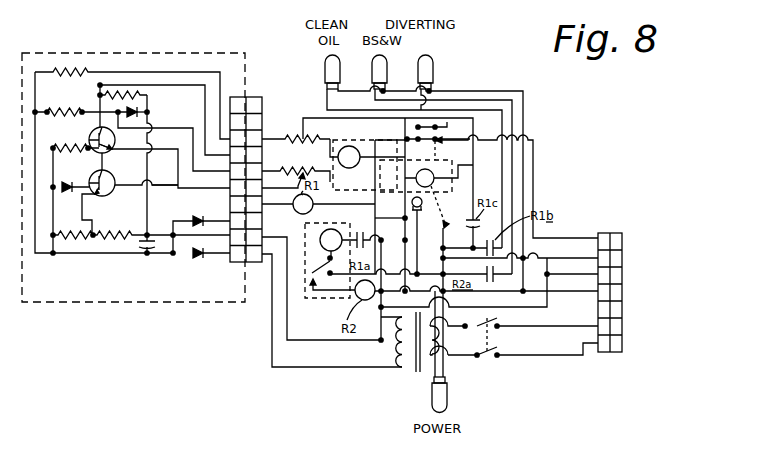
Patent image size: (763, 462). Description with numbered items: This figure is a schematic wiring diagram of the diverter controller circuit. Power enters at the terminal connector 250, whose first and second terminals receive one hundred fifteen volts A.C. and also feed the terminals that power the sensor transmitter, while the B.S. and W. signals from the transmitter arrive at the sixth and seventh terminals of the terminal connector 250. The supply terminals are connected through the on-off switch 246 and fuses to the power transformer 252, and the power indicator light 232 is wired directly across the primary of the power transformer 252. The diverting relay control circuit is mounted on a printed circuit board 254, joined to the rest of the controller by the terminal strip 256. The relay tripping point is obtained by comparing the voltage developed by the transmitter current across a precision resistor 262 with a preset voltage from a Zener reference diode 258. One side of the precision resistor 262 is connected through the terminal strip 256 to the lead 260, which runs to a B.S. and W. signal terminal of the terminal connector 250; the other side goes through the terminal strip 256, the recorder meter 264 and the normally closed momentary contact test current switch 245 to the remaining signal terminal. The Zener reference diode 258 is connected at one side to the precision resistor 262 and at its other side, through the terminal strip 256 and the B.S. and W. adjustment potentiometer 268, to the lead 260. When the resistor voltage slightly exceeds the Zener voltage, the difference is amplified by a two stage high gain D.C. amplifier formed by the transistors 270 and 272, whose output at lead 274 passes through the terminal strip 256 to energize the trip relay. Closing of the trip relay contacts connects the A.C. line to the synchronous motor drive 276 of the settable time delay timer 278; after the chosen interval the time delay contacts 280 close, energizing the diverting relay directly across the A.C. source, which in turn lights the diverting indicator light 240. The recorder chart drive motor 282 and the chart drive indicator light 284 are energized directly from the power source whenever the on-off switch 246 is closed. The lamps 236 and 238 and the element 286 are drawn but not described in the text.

The power indicator light 232 is at (449, 394).
The clean indicator lamp 236 is at (325, 74).
The oil indicator lamp 238 is at (373, 76).
The diverting indicator light 240 is at (434, 76).
The normally closed momentary contact test current switch 245 is at (437, 137).
The on-off switch 246 is at (490, 340).
The terminal connector 250 is at (612, 233).
The power transformer 252 is at (414, 373).
The printed circuit board 254 is at (110, 303).
The terminal strip 256 is at (247, 97).
The Zener reference diode 258 is at (139, 114).
The lead 260 is at (538, 309).
The precision resistor 262 is at (117, 94).
The recorder meter 264 is at (351, 146).
The B.S. and W. adjustment potentiometer 268 is at (296, 172).
The transistor 270 is at (89, 136).
The transistor 272 is at (101, 196).
The lead 274 is at (166, 189).
The synchronous motor drive 276 is at (331, 229).
The settable time delay timer 278 is at (305, 300).
The time delay contacts 280 is at (310, 274).
The recorder chart drive motor 282 is at (416, 173).
The chart drive indicator light 284 is at (412, 204).
The rheostat 286 is at (302, 134).